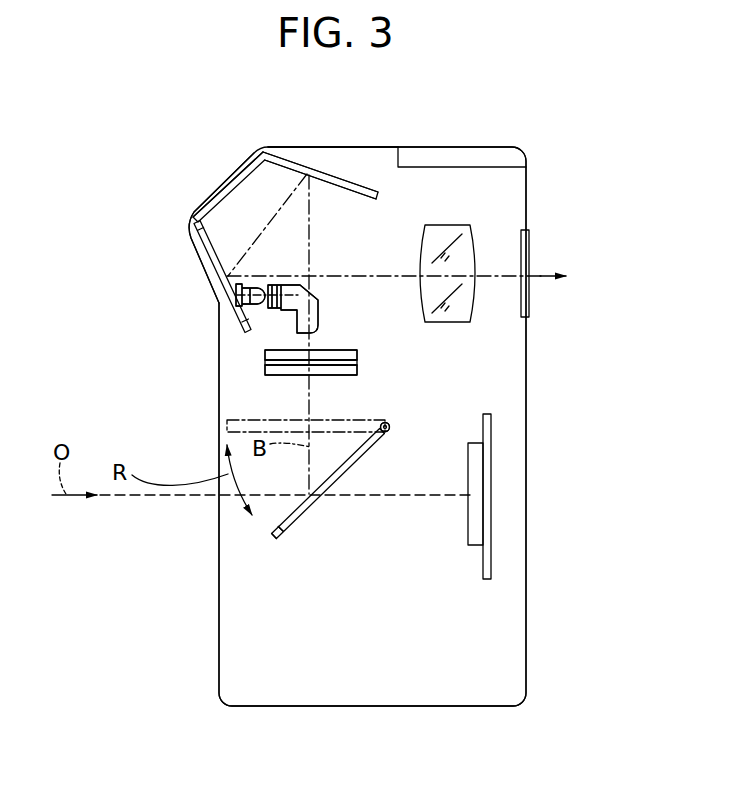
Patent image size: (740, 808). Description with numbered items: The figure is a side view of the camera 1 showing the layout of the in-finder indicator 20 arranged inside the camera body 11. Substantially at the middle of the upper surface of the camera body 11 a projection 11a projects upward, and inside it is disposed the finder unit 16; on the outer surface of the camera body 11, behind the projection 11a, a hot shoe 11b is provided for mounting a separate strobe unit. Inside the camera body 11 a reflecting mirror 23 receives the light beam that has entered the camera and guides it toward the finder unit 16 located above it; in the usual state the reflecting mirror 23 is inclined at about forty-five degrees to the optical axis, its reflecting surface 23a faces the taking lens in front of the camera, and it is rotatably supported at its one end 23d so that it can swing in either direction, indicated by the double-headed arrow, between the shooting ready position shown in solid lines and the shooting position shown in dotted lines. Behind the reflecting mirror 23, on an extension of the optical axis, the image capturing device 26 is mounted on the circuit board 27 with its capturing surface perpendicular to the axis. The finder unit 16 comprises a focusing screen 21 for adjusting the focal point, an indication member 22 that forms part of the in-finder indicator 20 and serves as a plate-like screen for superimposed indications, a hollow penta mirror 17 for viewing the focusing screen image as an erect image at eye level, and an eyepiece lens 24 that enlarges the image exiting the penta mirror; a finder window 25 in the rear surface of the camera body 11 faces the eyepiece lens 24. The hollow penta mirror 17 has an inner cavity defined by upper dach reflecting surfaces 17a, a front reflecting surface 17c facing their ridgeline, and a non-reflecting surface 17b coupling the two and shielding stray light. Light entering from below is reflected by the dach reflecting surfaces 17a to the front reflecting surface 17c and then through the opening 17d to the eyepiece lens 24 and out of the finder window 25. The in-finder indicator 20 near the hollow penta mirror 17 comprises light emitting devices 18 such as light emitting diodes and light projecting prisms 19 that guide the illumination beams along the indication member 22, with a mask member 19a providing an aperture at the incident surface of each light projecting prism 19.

The camera module 1 is at (560, 166).
The camera body 11 is at (513, 403).
The projection 11a is at (341, 152).
The hot shoe 11b is at (494, 154).
The finder unit 16 is at (145, 176).
The hollow penta mirror 17 is at (290, 101).
The dach reflecting surfaces 17a is at (290, 173).
The non-reflecting surface 17b is at (232, 201).
The front reflecting surface 17c is at (192, 234).
The opening 17d is at (331, 242).
The light emitting device 18 is at (252, 316).
The light projecting prism 19 is at (265, 355).
The mask member 19a is at (300, 323).
The in-finder indicator 20 is at (123, 437).
The focusing screen 21 is at (264, 372).
The indication member 22 is at (265, 374).
The reflecting mirror 23 is at (352, 458).
The reflecting surface 23a is at (276, 519).
The one end 23d is at (389, 423).
The eyepiece lens 24 is at (428, 242).
The finder window 25 is at (530, 245).
The image capturing device 26 is at (478, 533).
The circuit board 27 is at (488, 570).